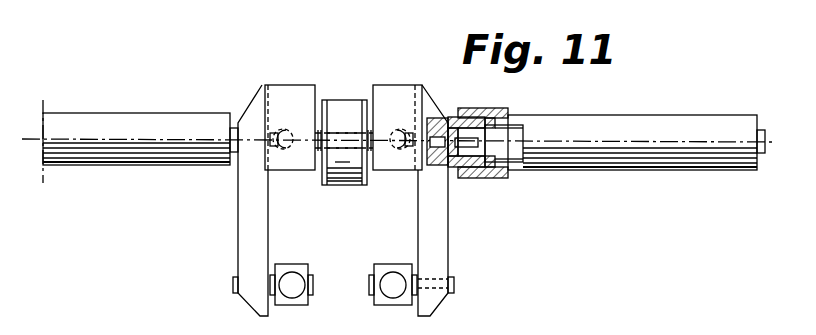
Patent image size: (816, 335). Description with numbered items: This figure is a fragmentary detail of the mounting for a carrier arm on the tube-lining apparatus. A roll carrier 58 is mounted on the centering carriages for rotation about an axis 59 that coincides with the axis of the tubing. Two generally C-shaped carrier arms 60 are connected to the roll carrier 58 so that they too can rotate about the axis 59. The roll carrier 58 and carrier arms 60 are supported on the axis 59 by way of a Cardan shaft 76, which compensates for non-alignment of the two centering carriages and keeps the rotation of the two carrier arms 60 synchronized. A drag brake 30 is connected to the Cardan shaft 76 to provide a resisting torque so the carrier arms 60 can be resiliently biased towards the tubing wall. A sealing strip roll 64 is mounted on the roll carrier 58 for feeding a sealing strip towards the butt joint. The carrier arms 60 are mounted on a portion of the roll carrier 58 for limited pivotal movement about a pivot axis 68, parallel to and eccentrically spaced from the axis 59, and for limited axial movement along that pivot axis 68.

The axis 59 is at (140, 138).
The roll carrier 58 is at (370, 90).
The Cardan shaft 76 is at (385, 133).
The sealing strip roll 64 is at (345, 186).
The carrier arms 60 is at (392, 289).
The pivot axis 68 is at (433, 283).
The drag brake 30 is at (480, 110).